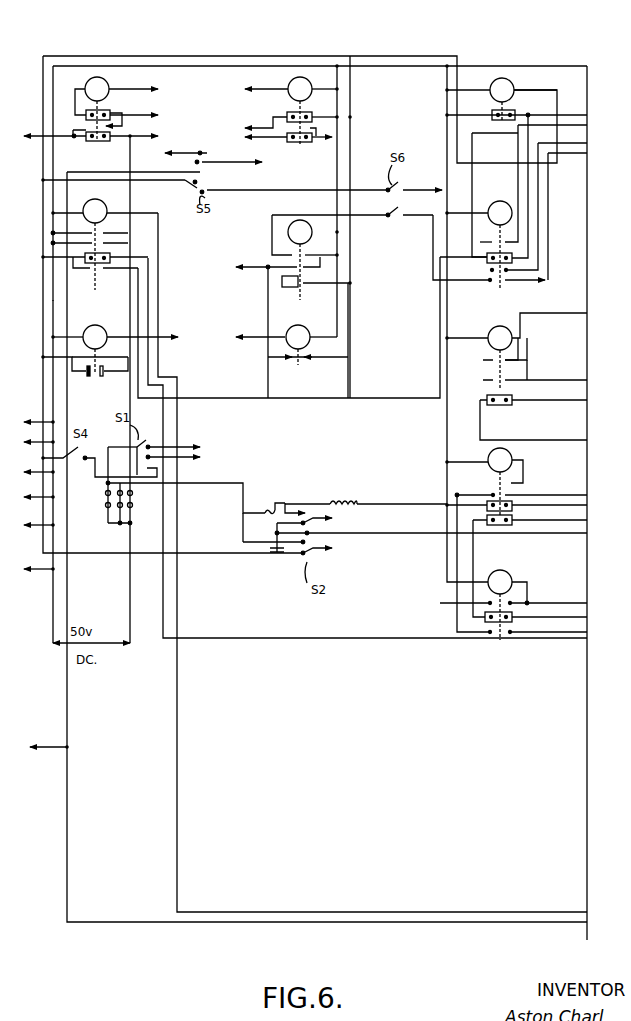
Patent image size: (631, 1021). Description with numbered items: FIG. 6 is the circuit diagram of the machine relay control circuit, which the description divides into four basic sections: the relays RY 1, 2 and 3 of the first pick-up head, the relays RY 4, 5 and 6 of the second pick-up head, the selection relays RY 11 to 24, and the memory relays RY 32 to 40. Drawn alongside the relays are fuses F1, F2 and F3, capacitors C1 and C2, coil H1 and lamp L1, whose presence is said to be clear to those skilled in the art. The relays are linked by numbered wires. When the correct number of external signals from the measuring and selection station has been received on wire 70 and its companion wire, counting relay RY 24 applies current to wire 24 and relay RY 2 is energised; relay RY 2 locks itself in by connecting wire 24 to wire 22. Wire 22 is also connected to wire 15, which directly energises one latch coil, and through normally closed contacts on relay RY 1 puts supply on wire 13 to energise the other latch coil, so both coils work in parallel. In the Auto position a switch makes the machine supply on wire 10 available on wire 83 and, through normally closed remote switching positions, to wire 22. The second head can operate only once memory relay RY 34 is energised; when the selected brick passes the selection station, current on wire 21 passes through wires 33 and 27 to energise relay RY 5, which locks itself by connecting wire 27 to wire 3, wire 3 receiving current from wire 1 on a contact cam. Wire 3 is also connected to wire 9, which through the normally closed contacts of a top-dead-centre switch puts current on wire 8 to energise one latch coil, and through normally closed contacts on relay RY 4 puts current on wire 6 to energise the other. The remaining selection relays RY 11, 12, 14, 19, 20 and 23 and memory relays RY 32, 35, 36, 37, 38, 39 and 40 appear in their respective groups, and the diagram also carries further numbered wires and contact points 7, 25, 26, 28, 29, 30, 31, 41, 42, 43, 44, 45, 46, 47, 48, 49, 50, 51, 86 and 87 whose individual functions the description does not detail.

The relay RY 1 is at (540, 545).
The relay RY 2 is at (246, 377).
The wire No. 3 is at (309, 268).
The relay RY 4 is at (284, 207).
The relay RY 5 is at (275, 158).
The wire No. 6 is at (354, 123).
The output line 7 is at (287, 112).
The wire No. 8 is at (275, 144).
The wire No. 9 is at (290, 265).
The wire No. 10 is at (228, 160).
The selection relay 11 is at (142, 328).
The selection relay 12 is at (138, 82).
The wire No. 13 is at (73, 131).
The selection relay 14 is at (137, 112).
The wire No. 15 is at (133, 258).
The selection relay 19 is at (177, 439).
The selection relay 20 is at (160, 450).
The wire No. 21 is at (503, 280).
The wire No. 22 is at (20, 262).
The selection relay 23 is at (287, 185).
The wire No. 24 is at (137, 226).
The relay 2 contact 25 is at (108, 265).
The relay armature 26 is at (485, 270).
The wire No. 27 is at (288, 230).
The line 28 is at (305, 285).
The negative supply line 29 is at (348, 560).
The line 30 is at (186, 470).
The line 31 is at (415, 181).
The memory relay 32 is at (480, 100).
The wire No. 33 is at (488, 283).
The memory relay RY 34 is at (479, 245).
The memory relay 35 is at (535, 82).
The memory relay 36 is at (562, 240).
The memory relay 37 is at (505, 208).
The memory relay 38 is at (512, 333).
The memory relay 39 is at (488, 360).
The memory relay 40 is at (512, 352).
The relay 36 contact 41 is at (490, 380).
The relay 36 contact 42 is at (482, 400).
The relay 36 contact 43 is at (502, 410).
The line 44 is at (462, 662).
The line 45 is at (447, 503).
The relay 38 contact 46 is at (512, 498).
The line 47 is at (487, 527).
The relay 40 contact 48 is at (548, 587).
The relay 40 contact 49 is at (507, 636).
The relay 34 contact 50 is at (518, 270).
The relay 34 contact 51 is at (508, 275).
The wire No. 70 is at (384, 545).
The wire No. 83 is at (171, 157).
The line 86 is at (329, 525).
The line 87 is at (318, 559).
The capacitor C1 is at (100, 388).
The capacitor C2 is at (273, 555).
The fuse F1 is at (104, 492).
The fuse F2 is at (117, 510).
The fuse F3 is at (132, 508).
The lamp L1 is at (268, 508).
The coil H1 is at (331, 505).